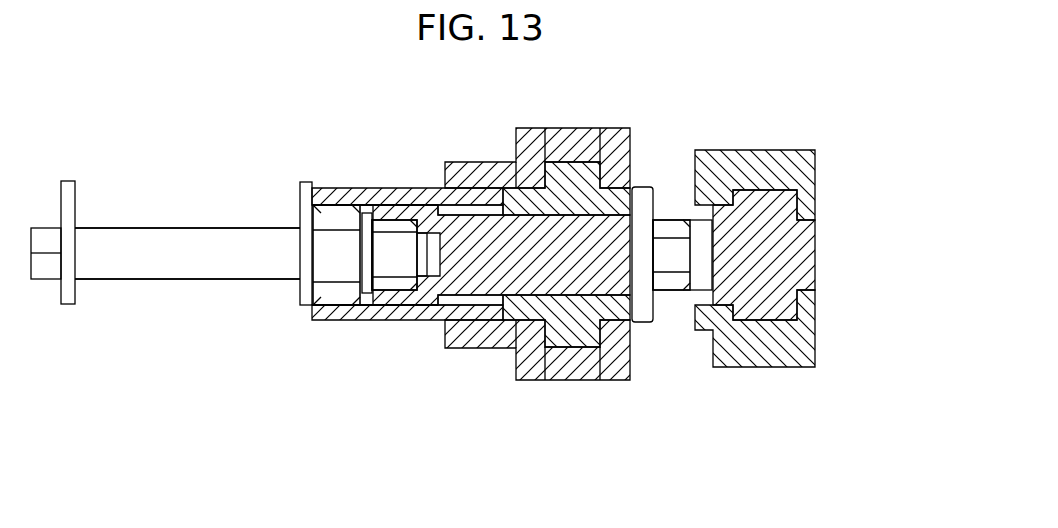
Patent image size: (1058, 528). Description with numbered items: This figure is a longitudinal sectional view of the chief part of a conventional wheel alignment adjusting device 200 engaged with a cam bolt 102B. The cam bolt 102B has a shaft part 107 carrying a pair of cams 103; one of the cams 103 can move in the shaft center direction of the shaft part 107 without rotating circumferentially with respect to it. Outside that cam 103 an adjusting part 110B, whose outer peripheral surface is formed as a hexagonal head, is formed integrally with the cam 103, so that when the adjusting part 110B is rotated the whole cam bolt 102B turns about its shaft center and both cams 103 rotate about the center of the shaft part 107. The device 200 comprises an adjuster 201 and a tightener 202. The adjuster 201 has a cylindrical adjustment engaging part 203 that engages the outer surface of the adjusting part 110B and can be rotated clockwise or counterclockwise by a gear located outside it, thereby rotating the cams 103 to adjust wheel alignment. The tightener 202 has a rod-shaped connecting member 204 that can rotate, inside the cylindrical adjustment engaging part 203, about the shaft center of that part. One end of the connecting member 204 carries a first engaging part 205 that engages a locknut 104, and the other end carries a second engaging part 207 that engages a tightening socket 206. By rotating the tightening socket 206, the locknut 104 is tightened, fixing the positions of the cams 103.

The cam 103 is at (72, 190).
The cam bolt 102B is at (182, 216).
The shaft part 107 is at (195, 262).
The adjusting part 110B is at (335, 260).
The locknut 104 is at (396, 250).
The adjustment engaging part 203 is at (468, 197).
The adjuster 201 is at (481, 353).
The connecting member 204 is at (565, 272).
The first engaging part 205 is at (392, 278).
The tightening socket 206 is at (668, 253).
The second engaging part 207 is at (668, 283).
The tightener 202 is at (834, 190).
The wheel alignment adjusting device 200 is at (852, 296).